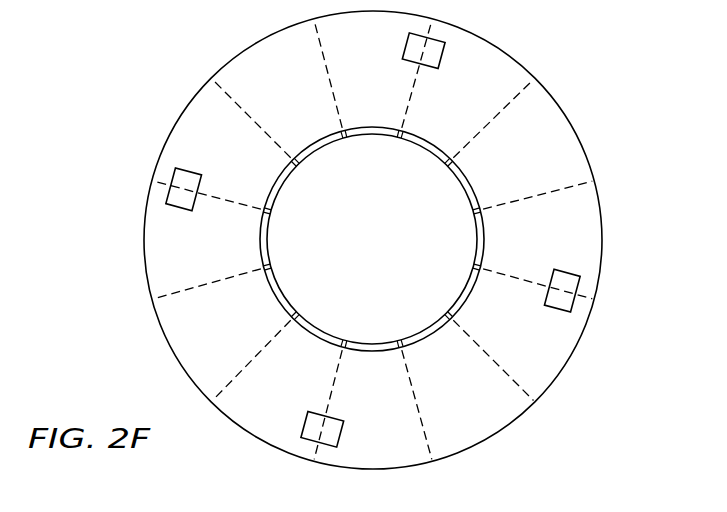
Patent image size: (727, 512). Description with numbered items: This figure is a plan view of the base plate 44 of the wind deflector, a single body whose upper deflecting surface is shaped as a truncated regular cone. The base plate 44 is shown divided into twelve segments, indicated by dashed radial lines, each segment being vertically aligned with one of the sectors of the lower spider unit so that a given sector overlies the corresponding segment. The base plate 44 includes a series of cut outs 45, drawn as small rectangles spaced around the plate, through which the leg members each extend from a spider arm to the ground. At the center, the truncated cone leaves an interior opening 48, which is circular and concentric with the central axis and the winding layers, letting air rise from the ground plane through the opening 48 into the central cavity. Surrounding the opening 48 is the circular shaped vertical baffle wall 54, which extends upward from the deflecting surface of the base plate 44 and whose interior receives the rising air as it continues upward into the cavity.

The base plate 44 is at (556, 63).
The cut outs 45 is at (574, 275).
The interior opening 48 is at (388, 250).
The circular shaped vertical baffle wall 54 is at (481, 244).